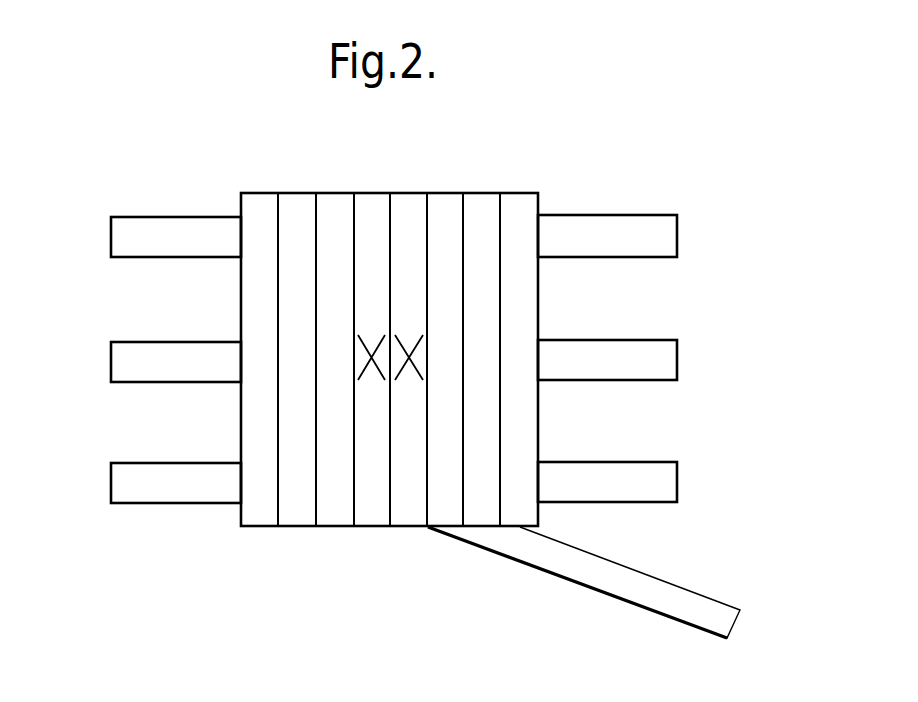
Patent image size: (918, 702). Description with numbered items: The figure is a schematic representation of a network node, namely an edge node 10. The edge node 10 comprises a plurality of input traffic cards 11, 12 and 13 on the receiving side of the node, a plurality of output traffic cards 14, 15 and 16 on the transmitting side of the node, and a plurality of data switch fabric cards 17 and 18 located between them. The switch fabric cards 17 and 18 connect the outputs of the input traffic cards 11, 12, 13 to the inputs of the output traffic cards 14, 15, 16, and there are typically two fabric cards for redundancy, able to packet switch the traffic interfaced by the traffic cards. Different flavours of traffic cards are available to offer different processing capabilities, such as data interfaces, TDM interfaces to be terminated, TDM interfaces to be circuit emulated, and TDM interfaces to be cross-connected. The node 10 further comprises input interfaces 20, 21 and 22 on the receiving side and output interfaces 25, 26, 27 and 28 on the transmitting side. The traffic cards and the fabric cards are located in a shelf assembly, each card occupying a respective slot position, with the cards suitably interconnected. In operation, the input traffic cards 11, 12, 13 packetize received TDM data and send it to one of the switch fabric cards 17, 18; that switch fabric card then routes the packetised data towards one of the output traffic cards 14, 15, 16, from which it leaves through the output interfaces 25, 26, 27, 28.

The edge node 10 is at (556, 83).
The input traffic card 11 is at (256, 198).
The input traffic card 12 is at (297, 198).
The input traffic card 13 is at (335, 198).
The output traffic card 14 is at (447, 198).
The output traffic card 15 is at (475, 198).
The output traffic card 16 is at (522, 198).
The data switch fabric card 17 is at (369, 515).
The data switch fabric card 18 is at (406, 515).
The input interface 20 is at (126, 235).
The input interface 21 is at (126, 363).
The input interface 22 is at (126, 485).
The output interface 25 is at (664, 236).
The output interface 26 is at (664, 360).
The output interface 27 is at (664, 485).
The output interface 28 is at (691, 617).